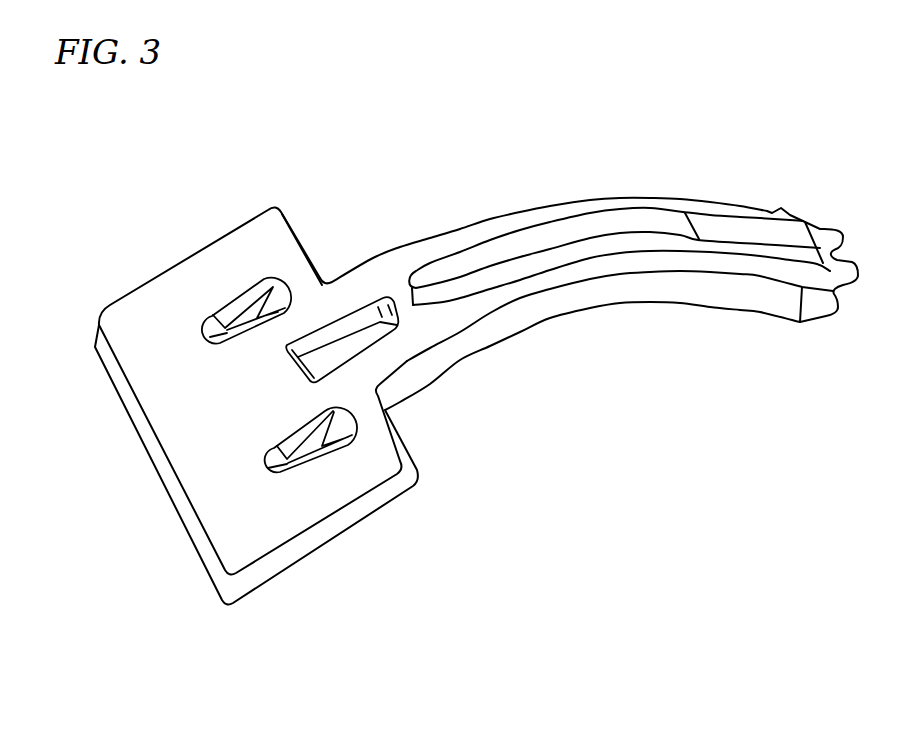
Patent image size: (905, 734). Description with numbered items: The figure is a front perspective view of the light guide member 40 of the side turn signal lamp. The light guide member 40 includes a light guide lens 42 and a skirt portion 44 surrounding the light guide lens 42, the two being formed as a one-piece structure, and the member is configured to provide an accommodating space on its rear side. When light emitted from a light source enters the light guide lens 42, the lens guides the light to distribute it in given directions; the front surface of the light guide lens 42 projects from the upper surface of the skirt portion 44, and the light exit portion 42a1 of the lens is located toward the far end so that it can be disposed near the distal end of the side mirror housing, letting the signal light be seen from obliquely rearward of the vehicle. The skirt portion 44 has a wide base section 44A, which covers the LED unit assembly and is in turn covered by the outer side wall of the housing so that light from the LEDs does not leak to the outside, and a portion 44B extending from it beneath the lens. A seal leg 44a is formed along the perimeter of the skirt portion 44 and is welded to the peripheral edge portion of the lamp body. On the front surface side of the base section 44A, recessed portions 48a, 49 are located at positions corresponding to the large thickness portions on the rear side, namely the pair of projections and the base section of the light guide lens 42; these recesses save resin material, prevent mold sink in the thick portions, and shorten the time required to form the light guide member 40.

The light guide member 40 is at (390, 172).
The light guide lens 42 is at (619, 208).
The light exit portion 42a1 is at (686, 212).
The skirt portion 44 is at (699, 512).
The base section 44A is at (272, 428).
The arm portion of plate body 44B is at (589, 335).
The seal leg 44a is at (600, 305).
The recessed portion 48a is at (242, 302).
The recessed portion 49 is at (347, 343).